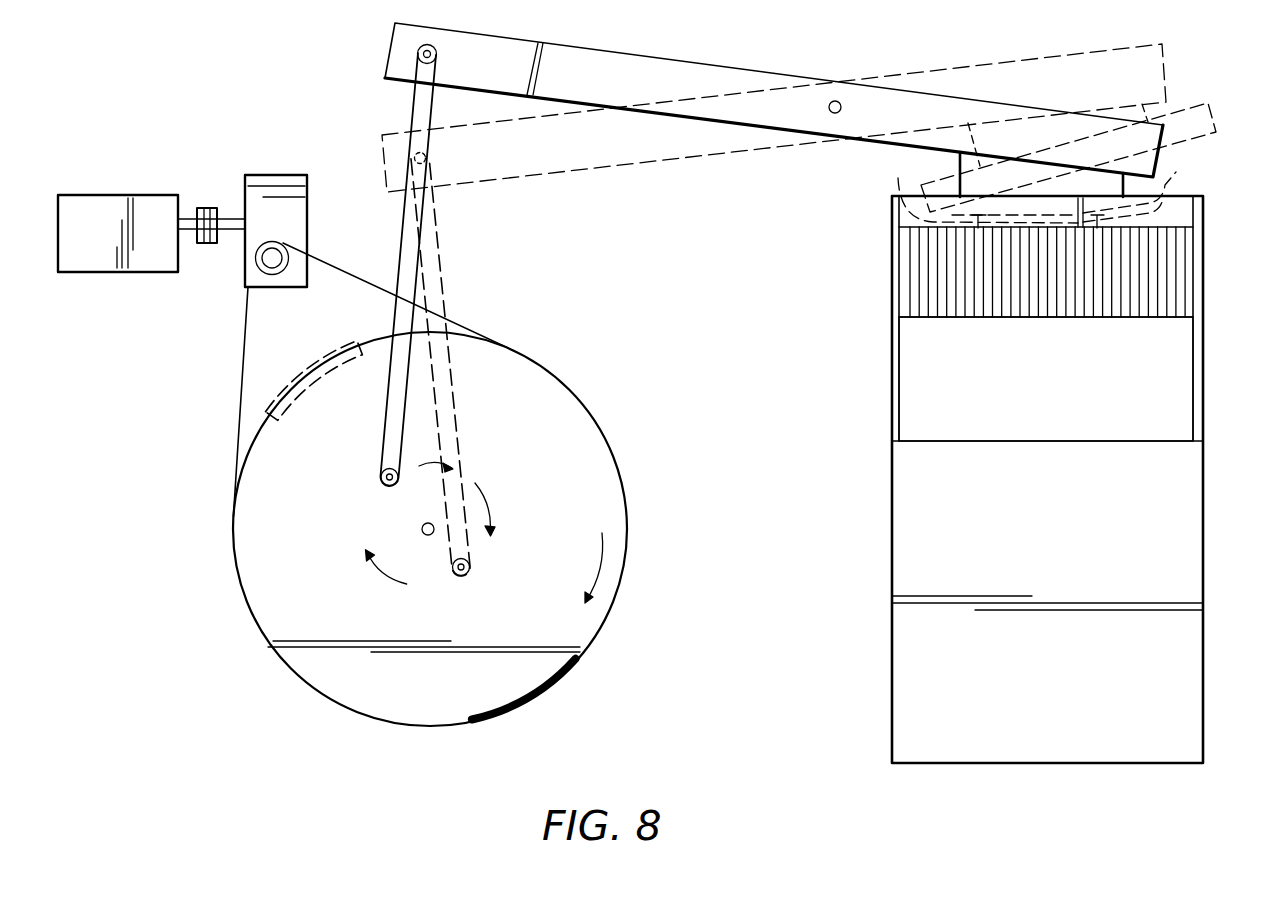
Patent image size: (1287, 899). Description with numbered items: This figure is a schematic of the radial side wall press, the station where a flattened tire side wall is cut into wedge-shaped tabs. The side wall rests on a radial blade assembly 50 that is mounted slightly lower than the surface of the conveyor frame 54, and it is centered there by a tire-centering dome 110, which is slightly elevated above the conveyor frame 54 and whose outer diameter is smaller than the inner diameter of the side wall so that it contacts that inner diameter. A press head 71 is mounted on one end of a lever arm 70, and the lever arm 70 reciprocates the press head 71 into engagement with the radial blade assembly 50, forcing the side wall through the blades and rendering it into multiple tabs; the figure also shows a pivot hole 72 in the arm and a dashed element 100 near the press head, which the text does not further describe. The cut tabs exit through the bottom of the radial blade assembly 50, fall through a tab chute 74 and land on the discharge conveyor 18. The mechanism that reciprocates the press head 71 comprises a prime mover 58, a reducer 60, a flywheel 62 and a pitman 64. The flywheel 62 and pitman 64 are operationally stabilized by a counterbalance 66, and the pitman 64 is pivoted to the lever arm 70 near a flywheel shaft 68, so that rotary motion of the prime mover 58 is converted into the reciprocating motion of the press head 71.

The discharge conveyor 18 is at (1205, 515).
The radial blade assembly 50 is at (1175, 267).
The conveyor frame 54 is at (1205, 298).
The prime mover 58 is at (157, 168).
The reducer 60 is at (262, 175).
The flywheel 62 is at (610, 437).
The pitman 64 is at (402, 240).
The counterbalance 66 is at (304, 365).
The flywheel shaft 68 is at (422, 527).
The lever arm 70 is at (505, 37).
The press head 71 is at (1215, 120).
The pivot hole 72 is at (838, 100).
The tab chute 74 is at (1177, 375).
The bag 100 is at (1175, 172).
The tire-centering dome 110 is at (903, 186).